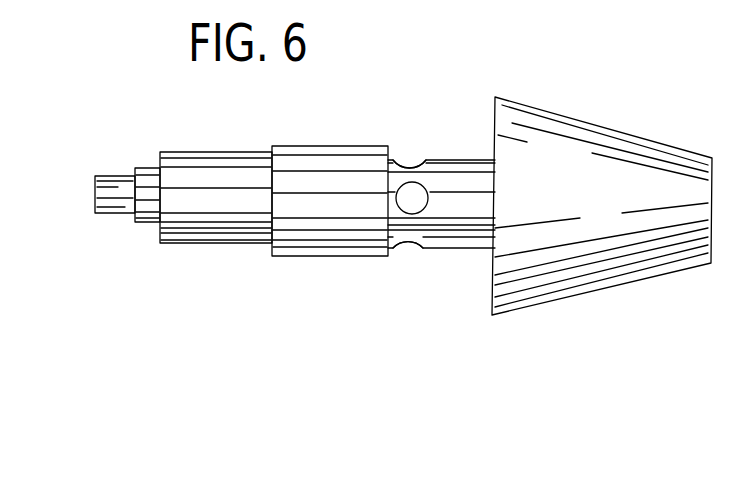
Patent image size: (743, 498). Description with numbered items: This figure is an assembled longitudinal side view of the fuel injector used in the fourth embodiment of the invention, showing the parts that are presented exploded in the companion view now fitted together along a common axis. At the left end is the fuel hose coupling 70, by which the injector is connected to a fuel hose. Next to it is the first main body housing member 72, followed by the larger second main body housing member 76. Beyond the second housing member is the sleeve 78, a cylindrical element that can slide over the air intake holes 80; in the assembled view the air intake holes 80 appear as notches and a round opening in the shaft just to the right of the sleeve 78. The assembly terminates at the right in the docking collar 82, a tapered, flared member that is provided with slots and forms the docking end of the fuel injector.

The fuel hose coupling 70 is at (95, 198).
The first main body housing member 72 is at (130, 218).
The second main body housing member 76 is at (203, 245).
The sleeve 78 is at (323, 257).
The air intake holes 80 is at (416, 166).
The docking collar 82 is at (597, 287).